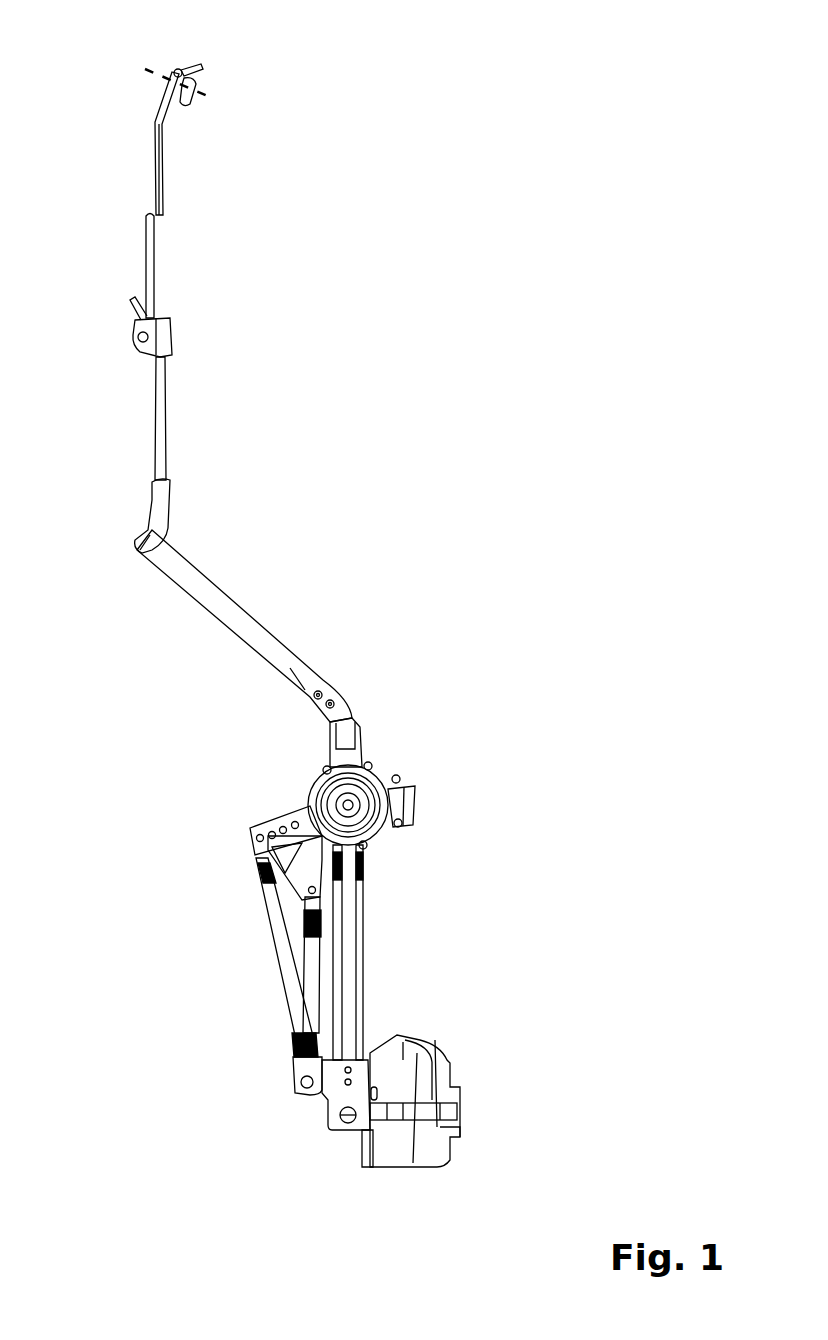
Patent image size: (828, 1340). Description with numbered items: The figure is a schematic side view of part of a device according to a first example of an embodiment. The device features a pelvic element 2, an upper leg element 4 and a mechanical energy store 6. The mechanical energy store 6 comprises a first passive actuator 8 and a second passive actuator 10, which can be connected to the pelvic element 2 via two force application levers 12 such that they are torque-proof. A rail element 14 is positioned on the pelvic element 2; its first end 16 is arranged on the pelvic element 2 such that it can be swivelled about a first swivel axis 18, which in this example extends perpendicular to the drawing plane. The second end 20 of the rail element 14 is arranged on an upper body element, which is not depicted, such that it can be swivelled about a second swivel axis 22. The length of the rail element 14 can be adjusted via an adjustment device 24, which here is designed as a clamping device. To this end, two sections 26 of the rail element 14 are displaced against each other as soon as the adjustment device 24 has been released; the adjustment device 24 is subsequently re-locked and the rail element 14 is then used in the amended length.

The pelvic element 2 is at (418, 755).
The upper leg element 4 is at (440, 1022).
The mechanical energy store 6 is at (284, 958).
The first passive actuator 8 is at (287, 978).
The second passive actuator 10 is at (312, 990).
The force application lever 12 is at (273, 822).
The rail element 14 is at (264, 502).
The first end 16 is at (391, 724).
The first swivel axis 18 is at (362, 800).
The second end 20 is at (152, 93).
The second swivel axis 22 is at (212, 95).
The adjustment device 24 is at (150, 332).
The section 26 is at (173, 200).